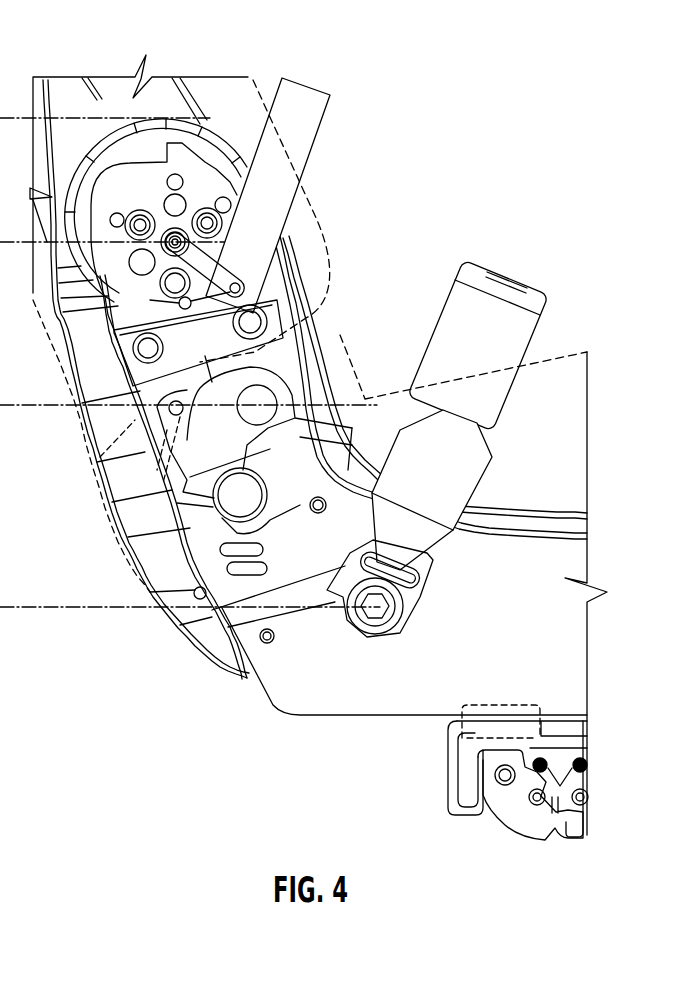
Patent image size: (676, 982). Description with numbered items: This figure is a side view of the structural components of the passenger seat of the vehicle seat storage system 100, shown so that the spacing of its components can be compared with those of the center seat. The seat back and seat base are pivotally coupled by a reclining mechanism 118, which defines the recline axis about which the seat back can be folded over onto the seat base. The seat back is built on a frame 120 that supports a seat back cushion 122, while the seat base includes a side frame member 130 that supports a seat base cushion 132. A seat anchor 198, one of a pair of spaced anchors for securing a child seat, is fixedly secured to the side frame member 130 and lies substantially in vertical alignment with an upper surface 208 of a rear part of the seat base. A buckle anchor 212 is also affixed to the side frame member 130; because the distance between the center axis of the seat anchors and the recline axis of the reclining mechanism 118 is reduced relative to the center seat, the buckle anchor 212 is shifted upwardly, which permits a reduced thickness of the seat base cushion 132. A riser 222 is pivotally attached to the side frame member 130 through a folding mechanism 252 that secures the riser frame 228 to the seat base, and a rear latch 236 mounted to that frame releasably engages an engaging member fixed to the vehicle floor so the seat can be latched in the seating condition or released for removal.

The vehicle seat storage system 100 is at (190, 762).
The reclining mechanism 118 is at (232, 88).
The frame 120 is at (160, 88).
The cushion 122 is at (318, 221).
The side frame member 130 is at (578, 643).
The cushion 132 is at (576, 348).
The seat anchor 198 is at (265, 397).
The upper surface 208 is at (107, 508).
The buckle anchor 212 is at (377, 612).
The riser 222 is at (476, 834).
The frame 228 is at (463, 771).
The rear latch 236 is at (530, 828).
The folding mechanism 252 is at (500, 705).